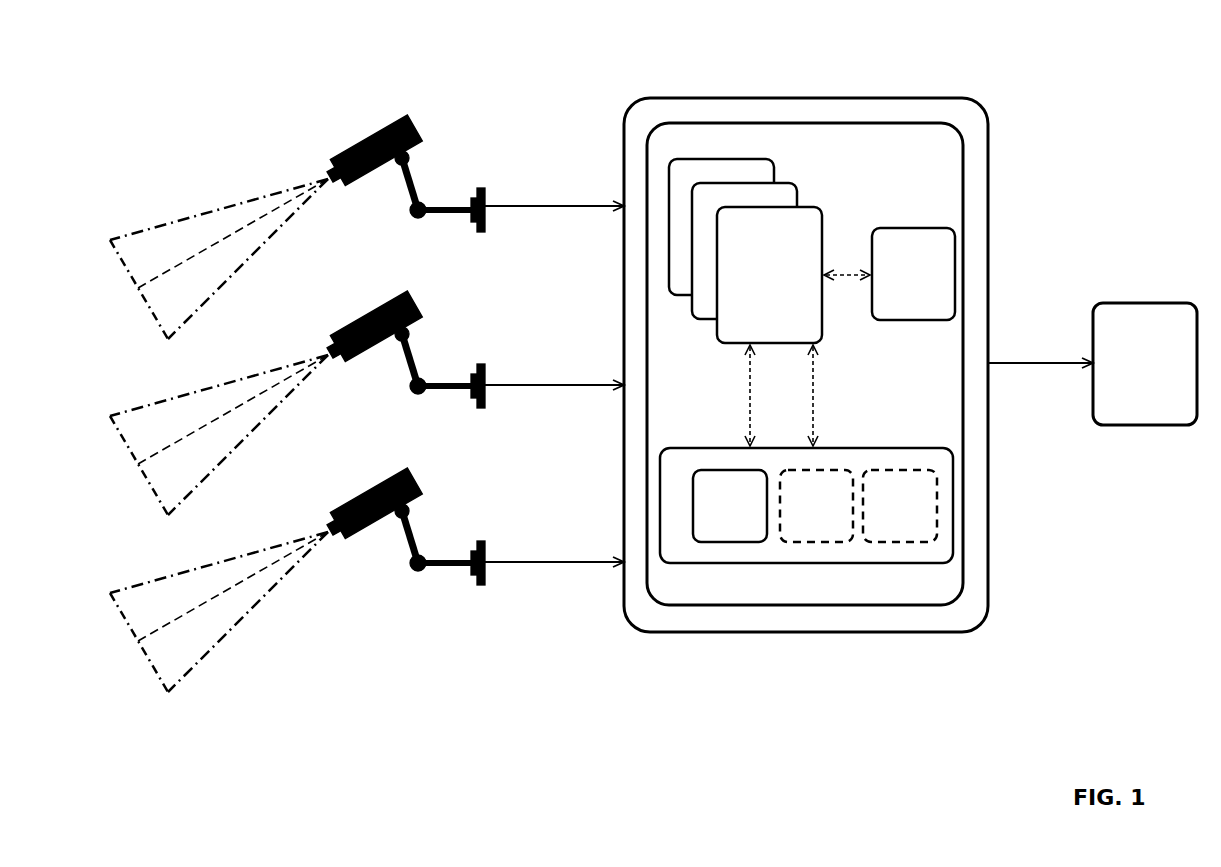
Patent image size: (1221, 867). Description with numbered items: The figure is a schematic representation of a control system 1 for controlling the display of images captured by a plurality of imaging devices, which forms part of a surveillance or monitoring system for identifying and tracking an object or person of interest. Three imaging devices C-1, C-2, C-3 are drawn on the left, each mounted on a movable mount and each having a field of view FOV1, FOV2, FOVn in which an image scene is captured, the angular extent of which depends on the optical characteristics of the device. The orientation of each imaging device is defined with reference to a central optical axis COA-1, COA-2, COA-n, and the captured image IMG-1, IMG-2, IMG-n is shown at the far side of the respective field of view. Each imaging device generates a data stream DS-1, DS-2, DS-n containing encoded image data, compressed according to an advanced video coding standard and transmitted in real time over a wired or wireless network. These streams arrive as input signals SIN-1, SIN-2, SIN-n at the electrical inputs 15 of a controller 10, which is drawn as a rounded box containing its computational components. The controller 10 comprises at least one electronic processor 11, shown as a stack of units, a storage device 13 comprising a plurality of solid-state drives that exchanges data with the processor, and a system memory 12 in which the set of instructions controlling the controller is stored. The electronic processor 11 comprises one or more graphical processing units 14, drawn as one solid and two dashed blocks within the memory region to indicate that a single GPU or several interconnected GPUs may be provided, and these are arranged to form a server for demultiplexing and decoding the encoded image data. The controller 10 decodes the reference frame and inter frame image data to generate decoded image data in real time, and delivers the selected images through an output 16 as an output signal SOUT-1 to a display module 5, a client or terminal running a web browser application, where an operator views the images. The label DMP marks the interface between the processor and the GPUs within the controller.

The control system 1 is at (1025, 75).
The display module 5 is at (1136, 382).
The controller 10 is at (965, 215).
The electronic processor 11 is at (754, 292).
The system memory 12 is at (953, 537).
The storage device 13 is at (897, 294).
The graphical processing unit 14 is at (715, 523).
The electrical input 15 is at (621, 204).
The output 16 is at (989, 364).
The imaging device C-1 is at (366, 141).
The imaging device C-2 is at (370, 314).
The imaging device C-3 is at (370, 492).
The central optical axis COA-1 is at (217, 247).
The central optical axis COA-2 is at (203, 430).
The central optical axis COA-n is at (212, 602).
The field of view FOV1 is at (219, 259).
The field of view FOV2 is at (219, 435).
The field of view FOVn is at (219, 612).
The image IMG-1 is at (120, 289).
The image IMG-2 is at (113, 465).
The image IMG-n is at (113, 642).
The data stream DS-1 is at (554, 182).
The data stream DS-2 is at (554, 361).
The data stream DS-n is at (554, 538).
The input signal SIN-1 is at (554, 194).
The input signal SIN-2 is at (554, 373).
The input signal SIN-n is at (554, 550).
The output signal SOUT-1 is at (1040, 348).
The data management process DMP is at (815, 395).